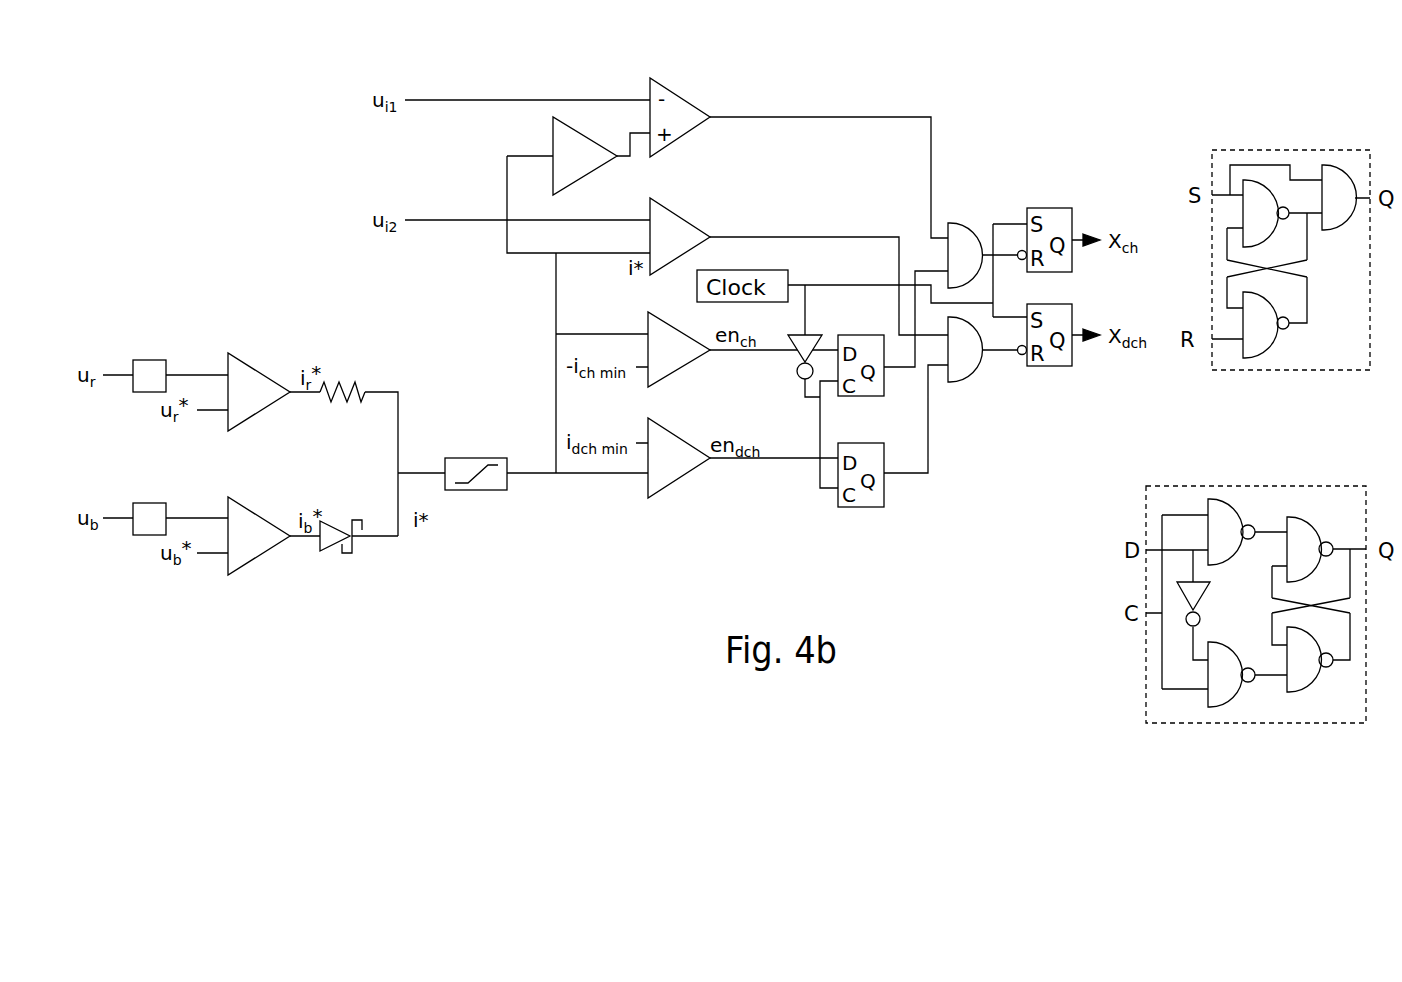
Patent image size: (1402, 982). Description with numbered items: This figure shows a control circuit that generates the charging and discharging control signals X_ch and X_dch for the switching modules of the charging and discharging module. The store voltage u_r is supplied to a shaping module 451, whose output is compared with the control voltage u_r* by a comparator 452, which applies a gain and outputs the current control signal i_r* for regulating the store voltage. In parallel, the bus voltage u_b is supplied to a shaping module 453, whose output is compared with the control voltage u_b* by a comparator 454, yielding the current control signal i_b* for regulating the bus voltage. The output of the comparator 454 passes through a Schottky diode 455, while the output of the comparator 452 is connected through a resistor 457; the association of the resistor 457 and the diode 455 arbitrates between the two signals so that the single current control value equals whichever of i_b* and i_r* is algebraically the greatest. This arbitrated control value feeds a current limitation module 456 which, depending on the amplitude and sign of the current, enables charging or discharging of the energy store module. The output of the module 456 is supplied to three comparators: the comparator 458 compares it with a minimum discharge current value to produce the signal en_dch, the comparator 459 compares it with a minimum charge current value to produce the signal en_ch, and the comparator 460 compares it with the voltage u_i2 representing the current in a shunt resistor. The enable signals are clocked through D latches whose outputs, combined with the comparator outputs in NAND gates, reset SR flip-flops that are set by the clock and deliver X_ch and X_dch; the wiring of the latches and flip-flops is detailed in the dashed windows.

The shaping module 451 is at (142, 392).
The comparator 452 is at (262, 366).
The shaping module 453 is at (142, 535).
The comparator 454 is at (240, 575).
The Schottky diode 455 is at (335, 553).
The current limitation module 456 is at (478, 490).
The resistor 457 is at (366, 388).
The comparator 458 is at (646, 430).
The comparator 459 is at (646, 318).
The comparator 460 is at (648, 215).